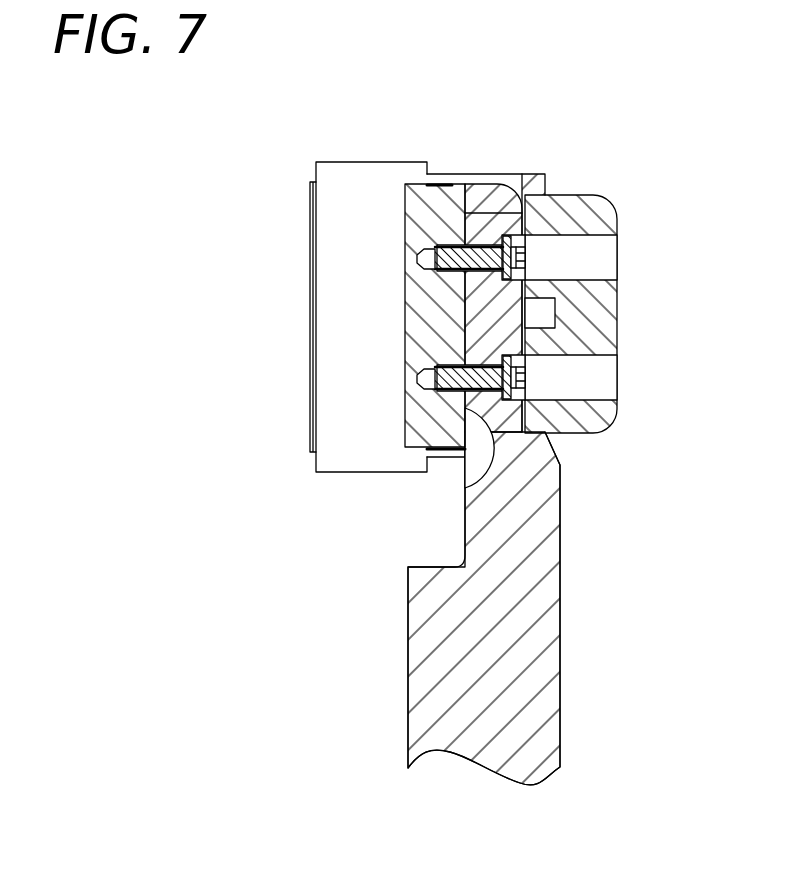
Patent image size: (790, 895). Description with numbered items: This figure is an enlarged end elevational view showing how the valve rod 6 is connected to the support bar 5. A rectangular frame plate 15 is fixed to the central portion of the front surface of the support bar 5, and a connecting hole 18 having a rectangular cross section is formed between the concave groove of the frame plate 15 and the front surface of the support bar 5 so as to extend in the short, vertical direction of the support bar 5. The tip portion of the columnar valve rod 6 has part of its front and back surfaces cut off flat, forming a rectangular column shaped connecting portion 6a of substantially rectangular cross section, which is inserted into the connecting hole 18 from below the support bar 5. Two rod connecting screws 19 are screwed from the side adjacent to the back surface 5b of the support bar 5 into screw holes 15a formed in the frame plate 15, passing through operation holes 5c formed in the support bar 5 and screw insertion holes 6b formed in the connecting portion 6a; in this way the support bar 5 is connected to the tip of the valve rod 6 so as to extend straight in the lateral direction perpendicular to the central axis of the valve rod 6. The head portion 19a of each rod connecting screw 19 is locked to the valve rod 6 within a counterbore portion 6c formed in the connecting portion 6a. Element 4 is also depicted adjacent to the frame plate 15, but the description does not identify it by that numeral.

The housing block 4 is at (360, 215).
The support bar 5 is at (593, 210).
The back surface of the support bar 5b is at (620, 305).
The operation holes 5c is at (590, 245).
The valve rod 6 is at (537, 677).
The connecting portion 6a is at (490, 313).
The screw insertion holes 6b is at (443, 266).
The counterbore portion 6c is at (508, 242).
The frame plate 15 is at (435, 203).
The screw holes 15a is at (417, 258).
The connecting hole 18 is at (465, 488).
The rod connecting screws 19 is at (482, 247).
The head portion 19a is at (525, 253).